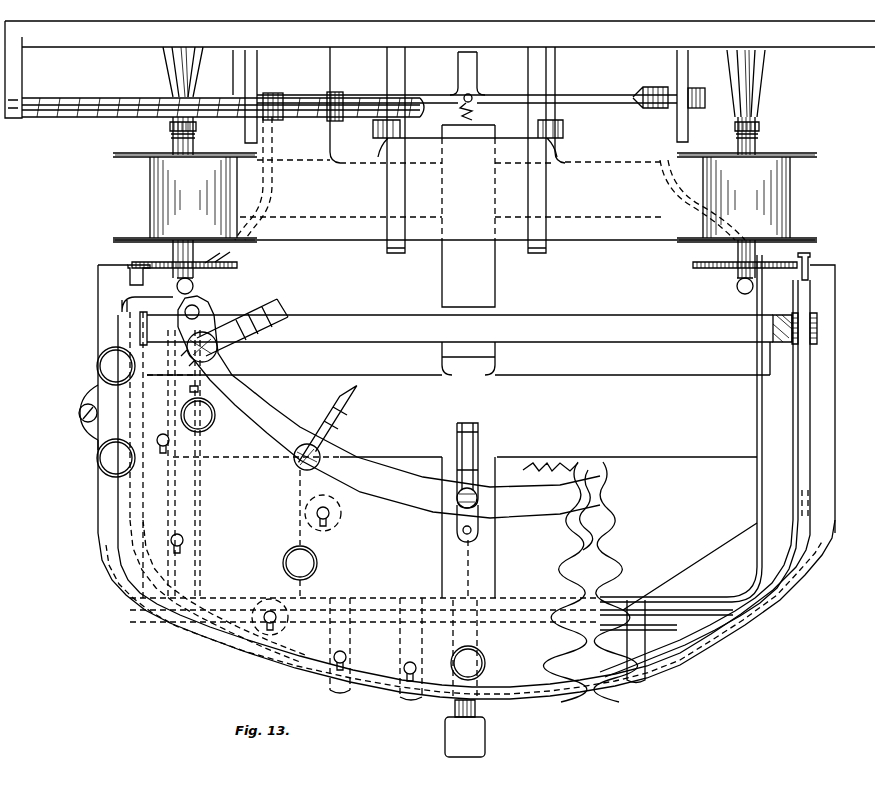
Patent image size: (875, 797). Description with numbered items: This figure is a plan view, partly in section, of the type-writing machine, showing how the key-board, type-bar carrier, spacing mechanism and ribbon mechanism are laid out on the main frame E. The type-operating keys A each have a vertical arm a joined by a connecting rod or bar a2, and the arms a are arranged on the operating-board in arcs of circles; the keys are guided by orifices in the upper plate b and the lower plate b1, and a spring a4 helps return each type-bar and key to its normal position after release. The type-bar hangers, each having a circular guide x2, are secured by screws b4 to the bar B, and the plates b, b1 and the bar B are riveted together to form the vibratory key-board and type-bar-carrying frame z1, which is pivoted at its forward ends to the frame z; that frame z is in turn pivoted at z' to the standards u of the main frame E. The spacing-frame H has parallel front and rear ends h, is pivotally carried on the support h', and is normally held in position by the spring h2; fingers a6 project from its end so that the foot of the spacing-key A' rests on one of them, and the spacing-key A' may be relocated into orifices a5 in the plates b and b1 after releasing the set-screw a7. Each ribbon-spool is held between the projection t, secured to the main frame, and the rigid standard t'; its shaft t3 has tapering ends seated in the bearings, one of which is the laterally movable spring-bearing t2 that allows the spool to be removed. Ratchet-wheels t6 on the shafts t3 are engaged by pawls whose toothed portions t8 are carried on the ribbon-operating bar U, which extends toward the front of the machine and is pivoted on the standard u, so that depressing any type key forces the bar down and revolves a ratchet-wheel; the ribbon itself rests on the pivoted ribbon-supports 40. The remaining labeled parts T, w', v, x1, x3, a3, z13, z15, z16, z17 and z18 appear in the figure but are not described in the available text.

The main frame E is at (440, 69).
The projection t is at (460, 82).
The front and rear ends of the spacing-frame h is at (509, 344).
The support h' is at (460, 96).
The spring h2 is at (456, 111).
The ribbon-supports 40 is at (468, 150).
The pulley T is at (464, 197).
The spring-bearing t2 is at (471, 123).
The shaft of the ribbon-spool t3 is at (471, 138).
The spacing-frame H is at (757, 400).
The ratchet-wheels t6 is at (237, 266).
The toothed portion of the pawl t8 is at (130, 278).
The standard t' is at (465, 290).
The spring a4 is at (118, 531).
The set-screw a7 is at (684, 651).
The ribbon-operating bar U is at (129, 291).
The frame z is at (460, 307).
The pivot of the frame z' is at (462, 329).
The nut w' is at (812, 327).
The standards u is at (114, 329).
The roller z17 is at (116, 366).
The roller z18 is at (116, 458).
The bracket z15 is at (88, 408).
The screw z16 is at (80, 409).
The bracket arm z13 is at (81, 435).
The bar B is at (389, 407).
The lever bracket x1 is at (467, 499).
The circular guide x2 is at (340, 402).
The lever x3 is at (337, 393).
The screw b4 is at (339, 427).
The upper plate b is at (443, 500).
The vibratory key-board and type-bar-carrying frame z1 is at (569, 578).
The lower plate b1 is at (579, 510).
The plate v is at (638, 629).
The type-operating keys A is at (333, 539).
The vertical arm of the type-operating key a is at (199, 387).
The orifices a5 is at (487, 641).
The connecting rod or bar a2 is at (299, 540).
The fingers a6 is at (650, 688).
The pin a3 is at (484, 705).
The spacing-key A' is at (465, 737).